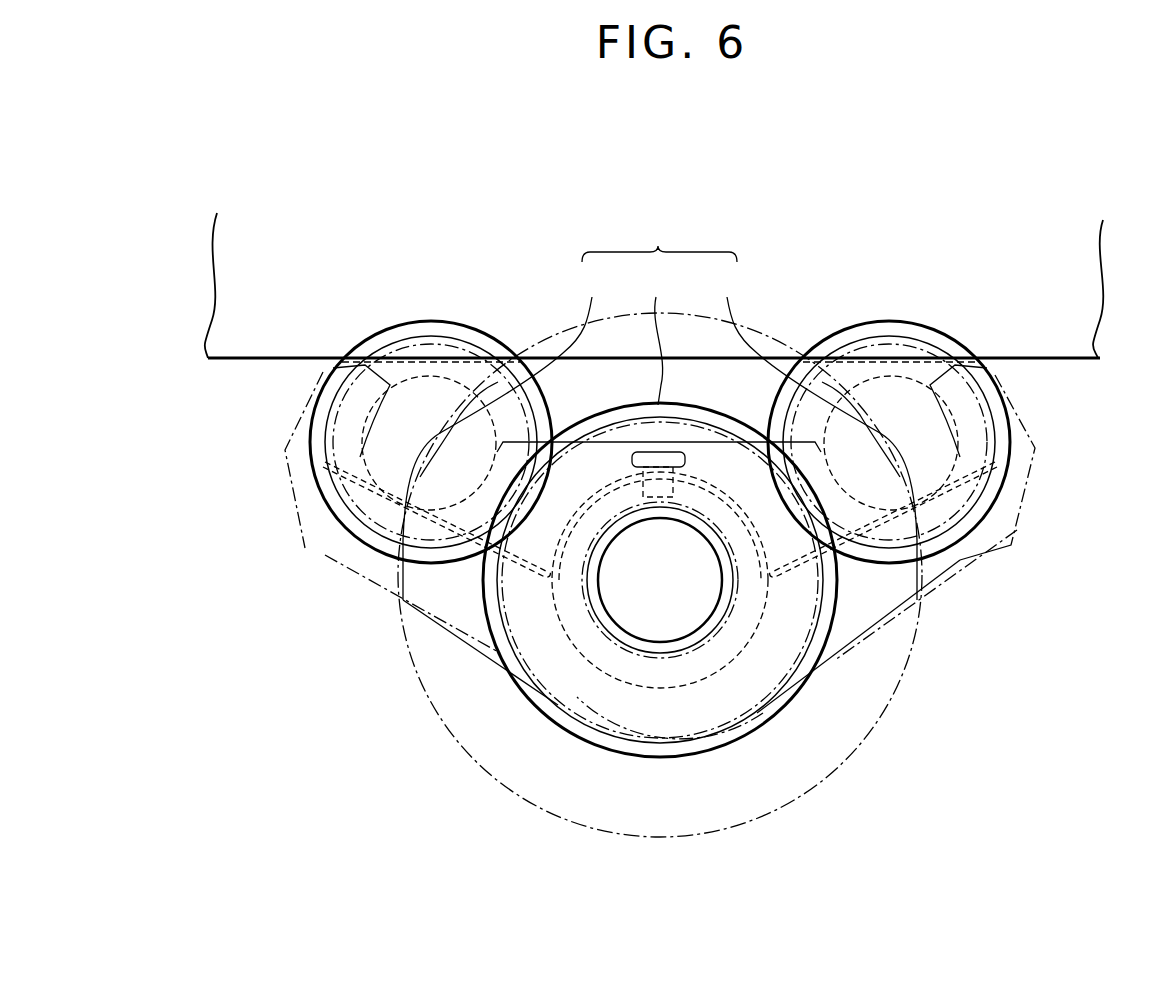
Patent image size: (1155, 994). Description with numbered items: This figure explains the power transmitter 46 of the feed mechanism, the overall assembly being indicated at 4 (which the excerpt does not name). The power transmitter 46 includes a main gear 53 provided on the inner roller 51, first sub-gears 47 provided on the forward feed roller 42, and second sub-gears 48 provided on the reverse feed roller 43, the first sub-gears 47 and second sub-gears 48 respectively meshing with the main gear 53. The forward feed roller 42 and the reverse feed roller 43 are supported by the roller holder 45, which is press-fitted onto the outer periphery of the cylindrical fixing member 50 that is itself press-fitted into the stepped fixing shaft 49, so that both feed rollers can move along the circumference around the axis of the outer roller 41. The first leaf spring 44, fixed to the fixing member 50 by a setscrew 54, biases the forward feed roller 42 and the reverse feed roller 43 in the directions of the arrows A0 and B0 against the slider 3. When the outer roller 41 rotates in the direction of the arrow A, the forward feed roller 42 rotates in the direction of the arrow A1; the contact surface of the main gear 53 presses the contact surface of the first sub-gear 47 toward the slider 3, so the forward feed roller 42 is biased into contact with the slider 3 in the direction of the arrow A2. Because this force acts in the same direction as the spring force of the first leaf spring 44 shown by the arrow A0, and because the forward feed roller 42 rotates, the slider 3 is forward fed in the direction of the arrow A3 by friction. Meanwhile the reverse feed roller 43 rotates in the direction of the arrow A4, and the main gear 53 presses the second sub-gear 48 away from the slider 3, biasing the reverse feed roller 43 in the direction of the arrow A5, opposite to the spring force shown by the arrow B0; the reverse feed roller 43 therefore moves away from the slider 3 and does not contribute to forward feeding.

The slider 3 is at (247, 360).
The roller unit 4 is at (955, 728).
The outer roller 41 is at (843, 763).
The forward feed roller 42 is at (420, 342).
The reverse feed roller 43 is at (886, 342).
The first leaf spring 44 is at (792, 575).
The roller holder 45 is at (1025, 492).
The power transmitter 46 is at (660, 410).
The first sub-gear 47 is at (506, 434).
The second sub-gear 48 is at (812, 434).
The stepped fixing shaft 49 is at (640, 637).
The fixing member 50 is at (573, 648).
The inner roller 51 is at (597, 455).
The main gear 53 is at (656, 336).
The setscrew 54 is at (662, 447).
The arrow A is at (762, 870).
The arrow A0 is at (400, 487).
The arrow A1 is at (313, 515).
The arrow A2 is at (452, 397).
The arrow A3 is at (572, 188).
The arrow A4 is at (1012, 500).
The arrow A5 is at (843, 417).
The arrow B0 is at (899, 444).